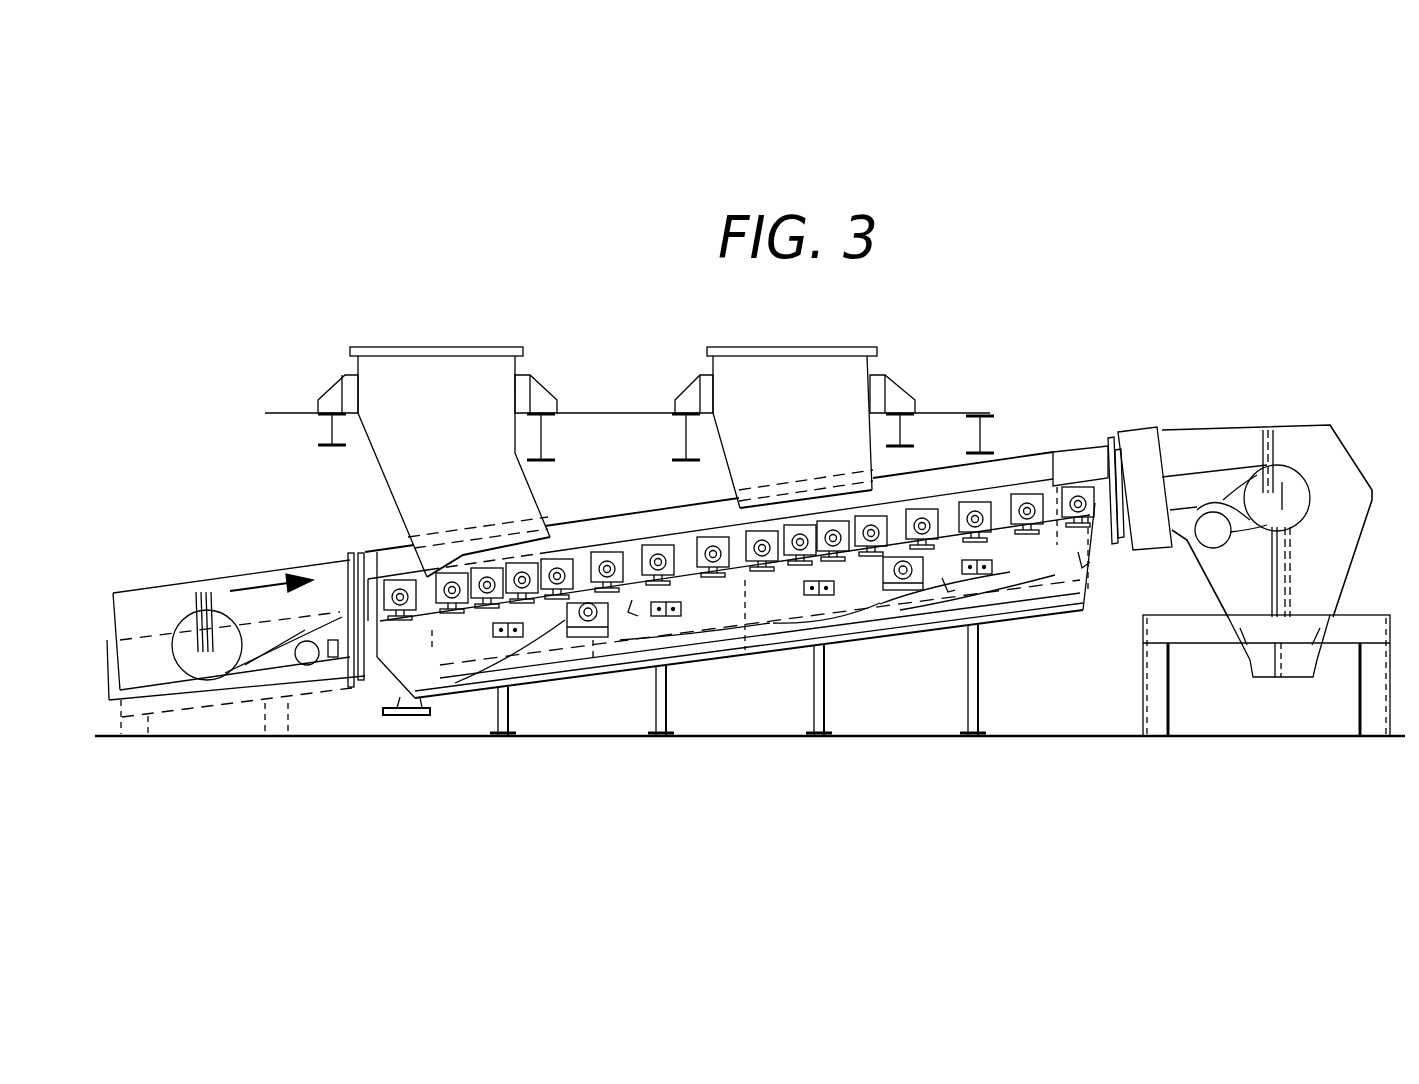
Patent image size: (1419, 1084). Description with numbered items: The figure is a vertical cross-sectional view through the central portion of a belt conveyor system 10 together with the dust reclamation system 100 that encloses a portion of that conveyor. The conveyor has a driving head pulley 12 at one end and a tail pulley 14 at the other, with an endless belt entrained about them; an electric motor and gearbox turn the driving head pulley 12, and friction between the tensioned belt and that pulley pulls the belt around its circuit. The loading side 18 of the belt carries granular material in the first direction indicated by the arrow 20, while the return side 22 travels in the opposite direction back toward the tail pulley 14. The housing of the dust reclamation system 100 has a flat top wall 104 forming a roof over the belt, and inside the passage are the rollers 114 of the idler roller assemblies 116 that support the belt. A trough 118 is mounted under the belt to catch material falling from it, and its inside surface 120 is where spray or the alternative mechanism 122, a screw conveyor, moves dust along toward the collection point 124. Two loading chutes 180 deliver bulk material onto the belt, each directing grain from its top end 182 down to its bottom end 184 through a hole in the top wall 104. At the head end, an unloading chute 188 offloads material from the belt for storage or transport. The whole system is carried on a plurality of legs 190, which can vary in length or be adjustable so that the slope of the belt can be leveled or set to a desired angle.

The belt conveyor system 10 is at (169, 545).
The driving head pulley 12 is at (1298, 502).
The tail pulley 14 is at (192, 654).
The loading side 18 is at (1200, 467).
The arrow 20 is at (258, 586).
The return side 22 is at (1157, 507).
The dust reclamation system 100 is at (618, 392).
The top wall 104 is at (1005, 462).
The rollers 114 is at (641, 560).
The idler roller assemblies 116 is at (567, 620).
The trough 118 is at (1010, 602).
The inside surface of the trough 120 is at (713, 640).
The alternative mechanism 122 is at (630, 614).
The collection point 124 is at (408, 684).
The loading chutes 180 is at (283, 363).
The top end 182 is at (425, 346).
The bottom end 184 is at (398, 505).
The unloading chute 188 is at (1302, 402).
The legs 190 is at (826, 704).